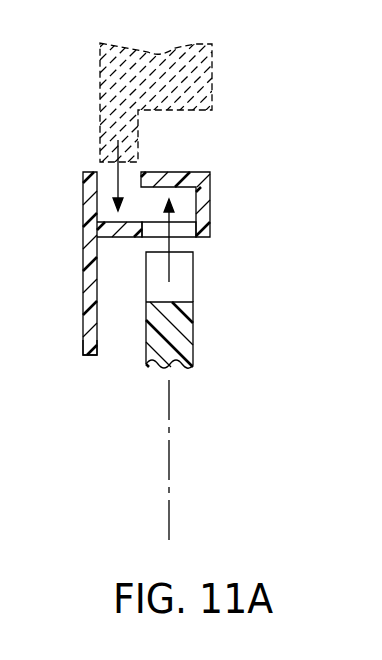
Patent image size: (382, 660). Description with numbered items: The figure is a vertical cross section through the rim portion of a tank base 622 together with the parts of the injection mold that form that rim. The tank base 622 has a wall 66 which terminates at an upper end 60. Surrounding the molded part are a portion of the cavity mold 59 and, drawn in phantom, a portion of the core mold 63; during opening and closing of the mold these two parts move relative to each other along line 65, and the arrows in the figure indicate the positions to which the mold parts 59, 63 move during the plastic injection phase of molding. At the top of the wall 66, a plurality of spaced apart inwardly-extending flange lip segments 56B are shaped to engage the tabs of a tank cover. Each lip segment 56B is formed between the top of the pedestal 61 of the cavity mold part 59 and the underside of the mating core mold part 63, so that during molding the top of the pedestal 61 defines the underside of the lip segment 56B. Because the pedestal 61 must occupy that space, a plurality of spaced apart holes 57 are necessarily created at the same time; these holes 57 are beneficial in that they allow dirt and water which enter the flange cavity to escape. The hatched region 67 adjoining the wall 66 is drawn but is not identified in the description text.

The core mold 63 is at (212, 86).
The upper end 60 is at (85, 270).
The wall 66 is at (83, 248).
The horizontal flange 67 is at (118, 238).
The tank base 622 is at (82, 343).
The flange lip segment 56B is at (176, 172).
The hole 57 is at (183, 229).
The pedestal 61 is at (194, 280).
The cavity mold 59 is at (197, 338).
The line 65 is at (170, 465).